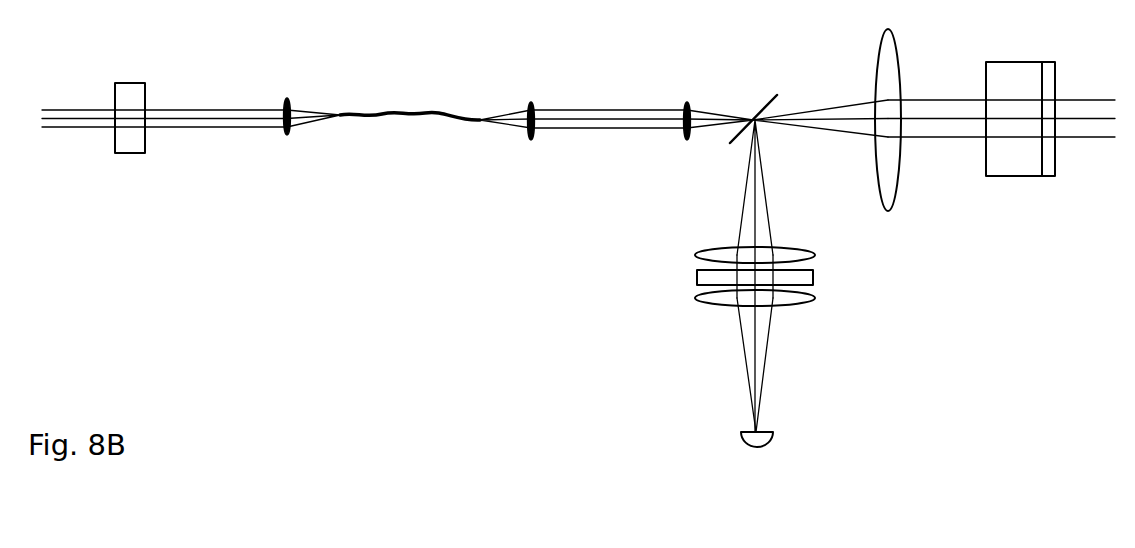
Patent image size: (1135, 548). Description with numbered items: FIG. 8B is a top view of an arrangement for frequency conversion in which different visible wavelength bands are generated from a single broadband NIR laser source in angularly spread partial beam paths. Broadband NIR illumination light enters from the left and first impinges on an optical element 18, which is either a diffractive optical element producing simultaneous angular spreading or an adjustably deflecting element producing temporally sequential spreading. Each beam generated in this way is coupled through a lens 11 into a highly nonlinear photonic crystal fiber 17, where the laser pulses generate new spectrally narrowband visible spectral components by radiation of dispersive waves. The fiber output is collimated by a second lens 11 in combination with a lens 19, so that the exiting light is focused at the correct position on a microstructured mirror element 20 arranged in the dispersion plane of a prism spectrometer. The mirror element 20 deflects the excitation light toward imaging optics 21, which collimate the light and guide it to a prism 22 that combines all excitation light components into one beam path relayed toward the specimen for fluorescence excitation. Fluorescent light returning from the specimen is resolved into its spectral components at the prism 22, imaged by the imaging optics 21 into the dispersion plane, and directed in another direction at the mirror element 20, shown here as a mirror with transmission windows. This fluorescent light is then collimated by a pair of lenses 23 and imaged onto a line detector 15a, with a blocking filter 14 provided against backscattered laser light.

The optical element 18 is at (144, 82).
The lens 11 is at (289, 135).
The highly nonlinear photonic crystal fiber 17 is at (428, 112).
The lens 19 is at (684, 104).
The microstructured mirror element 20 is at (776, 93).
The imaging optics 21 is at (881, 40).
The prism 22 is at (1017, 62).
The pair of lenses 23 is at (815, 254).
The blocking filter 14 is at (697, 275).
The line detector 15a is at (772, 438).